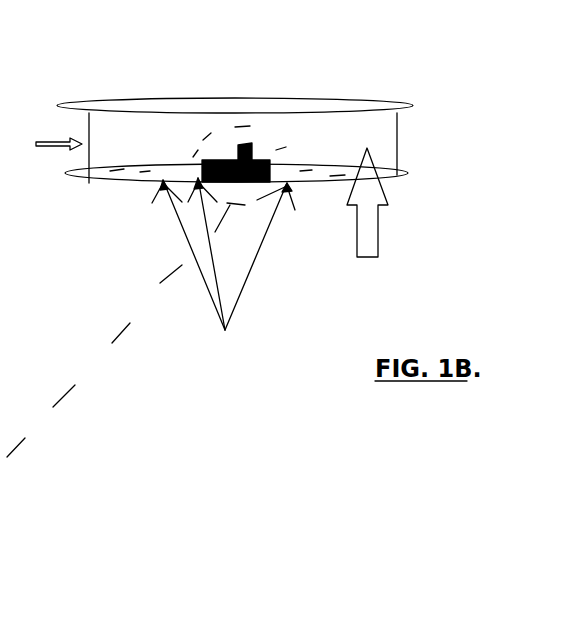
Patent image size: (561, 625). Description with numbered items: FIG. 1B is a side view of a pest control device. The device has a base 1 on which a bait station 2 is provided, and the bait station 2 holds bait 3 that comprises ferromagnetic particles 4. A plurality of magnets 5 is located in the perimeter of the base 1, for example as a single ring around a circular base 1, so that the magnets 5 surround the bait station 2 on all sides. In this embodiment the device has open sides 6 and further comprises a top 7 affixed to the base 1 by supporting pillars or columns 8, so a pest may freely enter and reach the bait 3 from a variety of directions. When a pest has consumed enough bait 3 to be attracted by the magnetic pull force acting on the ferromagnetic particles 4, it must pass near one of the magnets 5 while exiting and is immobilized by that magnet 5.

The base 1 is at (284, 178).
The bait station 2 is at (268, 153).
The bait 3 is at (225, 152).
The ferromagnetic particles 4 is at (249, 150).
The magnets 5 is at (151, 317).
The open sides 6 is at (367, 223).
The top 7 is at (280, 135).
The supporting pillars or columns 8 is at (47, 145).